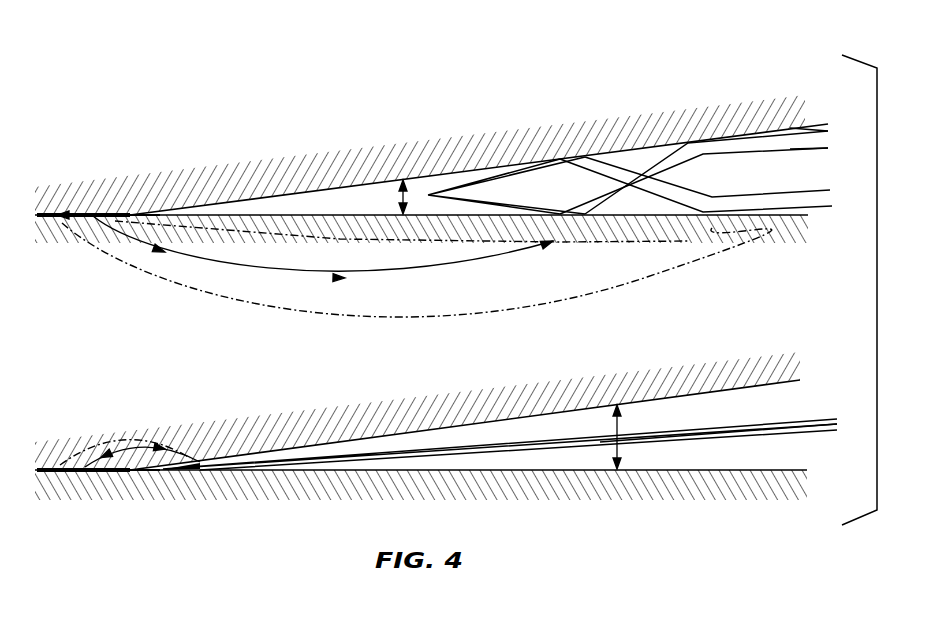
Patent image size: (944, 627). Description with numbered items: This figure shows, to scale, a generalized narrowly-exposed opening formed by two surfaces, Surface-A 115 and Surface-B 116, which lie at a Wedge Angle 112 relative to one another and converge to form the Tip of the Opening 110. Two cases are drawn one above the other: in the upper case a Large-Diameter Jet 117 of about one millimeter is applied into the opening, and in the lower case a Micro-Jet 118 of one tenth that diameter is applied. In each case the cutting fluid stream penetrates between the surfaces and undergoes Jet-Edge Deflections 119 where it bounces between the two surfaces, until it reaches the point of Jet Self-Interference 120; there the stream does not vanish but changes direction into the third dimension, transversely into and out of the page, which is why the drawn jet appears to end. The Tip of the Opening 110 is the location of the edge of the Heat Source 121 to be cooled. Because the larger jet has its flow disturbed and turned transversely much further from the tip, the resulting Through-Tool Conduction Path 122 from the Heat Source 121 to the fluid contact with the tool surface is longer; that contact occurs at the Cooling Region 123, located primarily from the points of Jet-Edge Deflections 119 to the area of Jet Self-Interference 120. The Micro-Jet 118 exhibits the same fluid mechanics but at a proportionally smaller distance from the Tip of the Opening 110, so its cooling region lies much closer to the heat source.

The tip of the opening 110 is at (118, 213).
The wedge angle 112 is at (398, 192).
The Surface-A 115 is at (773, 120).
The Surface-B 116 is at (792, 222).
The large-diameter jet 117 is at (792, 177).
The micro-jet 118 is at (700, 437).
The jet-edge deflections 119 is at (688, 147).
The jet self-interference 120 is at (525, 190).
The heat source 121 is at (70, 213).
The through-tool conduction path 122 is at (197, 258).
The cooling region 123 is at (640, 238).